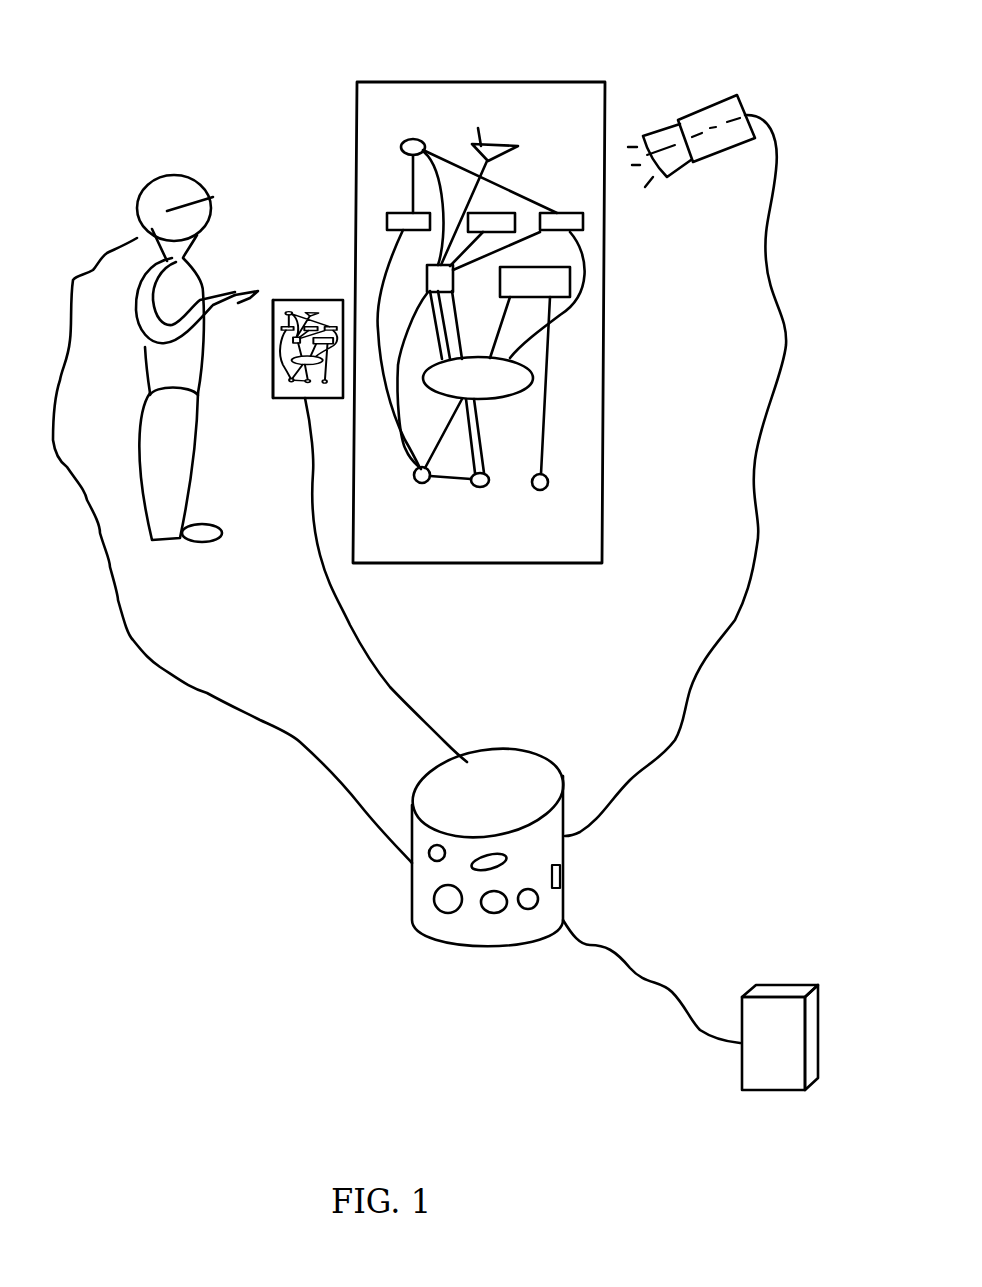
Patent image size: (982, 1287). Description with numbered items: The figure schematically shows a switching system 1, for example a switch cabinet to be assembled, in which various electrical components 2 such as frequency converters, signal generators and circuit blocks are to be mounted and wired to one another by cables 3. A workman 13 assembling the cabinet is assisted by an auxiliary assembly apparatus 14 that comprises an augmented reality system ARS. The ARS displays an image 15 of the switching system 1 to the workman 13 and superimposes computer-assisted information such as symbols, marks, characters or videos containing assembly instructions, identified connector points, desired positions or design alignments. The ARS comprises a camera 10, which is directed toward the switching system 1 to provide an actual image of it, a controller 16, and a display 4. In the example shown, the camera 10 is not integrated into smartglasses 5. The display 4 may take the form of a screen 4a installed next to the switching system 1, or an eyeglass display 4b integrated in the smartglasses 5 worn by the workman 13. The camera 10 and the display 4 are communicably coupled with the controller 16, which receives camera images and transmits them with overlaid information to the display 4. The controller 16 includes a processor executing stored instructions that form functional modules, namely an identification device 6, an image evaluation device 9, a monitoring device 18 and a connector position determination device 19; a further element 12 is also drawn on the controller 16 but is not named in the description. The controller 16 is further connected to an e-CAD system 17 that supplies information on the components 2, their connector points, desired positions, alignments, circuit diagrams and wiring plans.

The switching system 1 is at (548, 90).
The electrical components 2 is at (548, 508).
The cables 3 is at (512, 196).
The display 4 is at (262, 375).
The screen 4a is at (307, 300).
The eyeglass display 4b is at (253, 276).
The smartglasses 5 is at (237, 237).
The identification device 6 is at (437, 884).
The image evaluation device 9 is at (496, 913).
The camera 10 is at (705, 113).
The interface 12 is at (529, 909).
The workman 13 is at (148, 373).
The auxiliary assembly apparatus 14 is at (195, 143).
The image 15 is at (276, 329).
The controller 16 is at (472, 762).
The e-CAD system 17 is at (777, 1000).
The monitoring device 18 is at (499, 851).
The connector position determination device 19 is at (430, 847).
The augmented reality system ARS is at (302, 870).